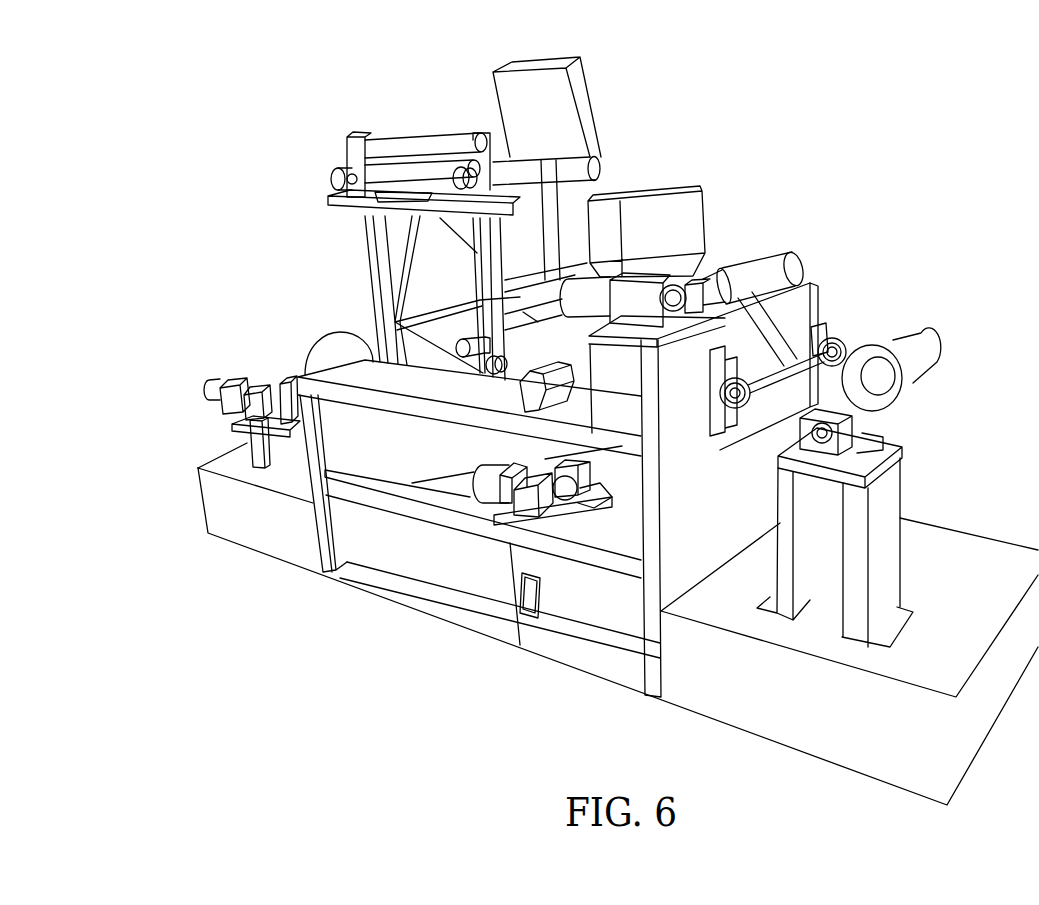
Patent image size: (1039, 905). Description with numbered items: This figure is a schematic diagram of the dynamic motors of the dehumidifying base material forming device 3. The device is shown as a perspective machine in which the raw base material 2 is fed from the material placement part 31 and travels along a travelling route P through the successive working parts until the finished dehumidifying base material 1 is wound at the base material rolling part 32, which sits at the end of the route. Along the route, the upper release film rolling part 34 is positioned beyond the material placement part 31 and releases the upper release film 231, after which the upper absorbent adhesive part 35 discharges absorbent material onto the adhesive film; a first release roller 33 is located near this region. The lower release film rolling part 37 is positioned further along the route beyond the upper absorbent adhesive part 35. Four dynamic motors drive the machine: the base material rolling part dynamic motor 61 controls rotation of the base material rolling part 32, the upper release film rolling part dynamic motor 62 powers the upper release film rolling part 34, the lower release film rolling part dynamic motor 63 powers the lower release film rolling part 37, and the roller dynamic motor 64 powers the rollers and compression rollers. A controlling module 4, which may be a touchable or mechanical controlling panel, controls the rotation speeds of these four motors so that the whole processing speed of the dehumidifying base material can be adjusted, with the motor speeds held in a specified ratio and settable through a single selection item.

The dehumidifying base material forming device 3 is at (212, 89).
The controlling module 4 is at (562, 99).
The upper absorbent adhesive part 35 is at (689, 203).
The upper release film rolling part 34 is at (760, 267).
The upper release film 231 is at (750, 320).
The material placement part 31 is at (960, 324).
The first release roller 33 is at (836, 346).
The travelling route P is at (882, 345).
The raw base material 2 is at (900, 397).
The base material rolling part 32 is at (290, 350).
The dehumidifying base material 1 is at (355, 335).
The base material rolling part dynamic motor 61 is at (240, 405).
The roller dynamic motor 64 is at (530, 397).
The lower release film rolling part dynamic motor 63 is at (528, 507).
The lower release film rolling part 37 is at (602, 478).
The upper release film rolling part dynamic motor 62 is at (625, 317).